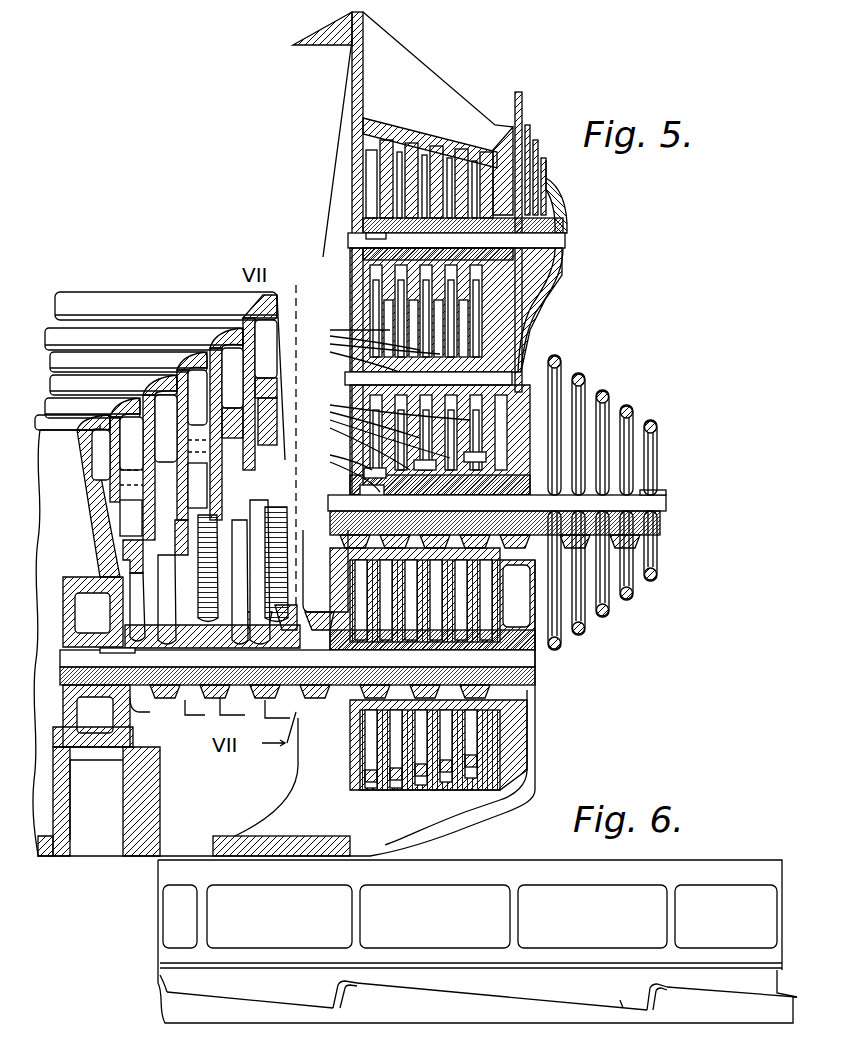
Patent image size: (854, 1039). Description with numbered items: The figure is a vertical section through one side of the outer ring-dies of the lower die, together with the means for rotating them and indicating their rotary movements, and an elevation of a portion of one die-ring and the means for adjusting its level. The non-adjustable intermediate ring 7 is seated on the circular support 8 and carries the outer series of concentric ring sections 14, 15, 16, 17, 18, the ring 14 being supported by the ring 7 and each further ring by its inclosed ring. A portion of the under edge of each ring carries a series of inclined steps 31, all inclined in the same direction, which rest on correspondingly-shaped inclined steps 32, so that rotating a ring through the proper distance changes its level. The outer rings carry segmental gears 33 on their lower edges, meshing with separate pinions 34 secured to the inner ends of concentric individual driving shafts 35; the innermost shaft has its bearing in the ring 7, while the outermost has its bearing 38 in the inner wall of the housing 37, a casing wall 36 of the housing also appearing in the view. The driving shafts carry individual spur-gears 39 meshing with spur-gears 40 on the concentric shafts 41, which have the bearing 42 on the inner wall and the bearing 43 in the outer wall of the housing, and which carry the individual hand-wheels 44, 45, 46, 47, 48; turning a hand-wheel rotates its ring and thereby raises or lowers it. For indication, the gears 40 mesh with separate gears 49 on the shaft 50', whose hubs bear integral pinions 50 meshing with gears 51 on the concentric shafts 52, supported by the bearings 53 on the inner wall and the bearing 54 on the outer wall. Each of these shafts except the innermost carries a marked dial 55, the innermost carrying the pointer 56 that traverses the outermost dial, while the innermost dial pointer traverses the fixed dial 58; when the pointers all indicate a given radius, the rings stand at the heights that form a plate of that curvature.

In FIG. 5, the intermediate ring 7 is at (77, 494).
In FIG. 5, the circular support 8 is at (135, 780).
In FIG. 5, the ring section 14 is at (94, 448).
In FIG. 5, the ring section 15 is at (113, 456).
In FIG. 5, the ring section 16 is at (128, 434).
In FIG. 5, the ring section 17 is at (144, 423).
In FIG. 6, the ring section 17 is at (477, 996).
In FIG. 5, the ring section 18 is at (170, 381).
In FIG. 6, the ring section 18 is at (470, 921).
In FIG. 5, the inclined steps 31 is at (116, 505).
In FIG. 6, the inclined steps 31 is at (353, 987).
In FIG. 5, the inclined steps 32 is at (227, 490).
In FIG. 6, the inclined steps 32 is at (165, 988).
In FIG. 5, the segmental gears 33 is at (208, 565).
In FIG. 5, the pinions 34 is at (180, 702).
In FIG. 5, the driving shafts 35 is at (332, 640).
In FIG. 5, the casing wall 36 is at (518, 678).
In FIG. 5, the housing 37 is at (428, 253).
In FIG. 5, the bearing 38 is at (292, 738).
In FIG. 5, the spur-gears 39 is at (462, 760).
In FIG. 5, the spur-gears 40 is at (339, 467).
In FIG. 5, the concentric shafts 41 is at (666, 504).
In FIG. 5, the bearing 42 is at (325, 571).
In FIG. 5, the bearing 43 is at (495, 580).
In FIG. 5, the hand-wheel 44 is at (559, 515).
In FIG. 5, the hand-wheel 45 is at (580, 633).
In FIG. 5, the hand-wheel 46 is at (604, 615).
In FIG. 5, the hand-wheel 47 is at (630, 597).
In FIG. 5, the hand-wheel 48 is at (658, 578).
In FIG. 5, the gears 49 is at (517, 403).
In FIG. 5, the pinions 50 is at (440, 337).
In FIG. 5, the shaft 50' is at (404, 374).
In FIG. 5, the gears 51 is at (487, 155).
In FIG. 5, the concentric shafts 52 is at (348, 238).
In FIG. 5, the bearings 53 is at (348, 259).
In FIG. 5, the bearing 54 is at (508, 282).
In FIG. 5, the dial 55 is at (540, 170).
In FIG. 5, the pointer 56 is at (557, 212).
In FIG. 5, the fixed dial 58 is at (507, 226).